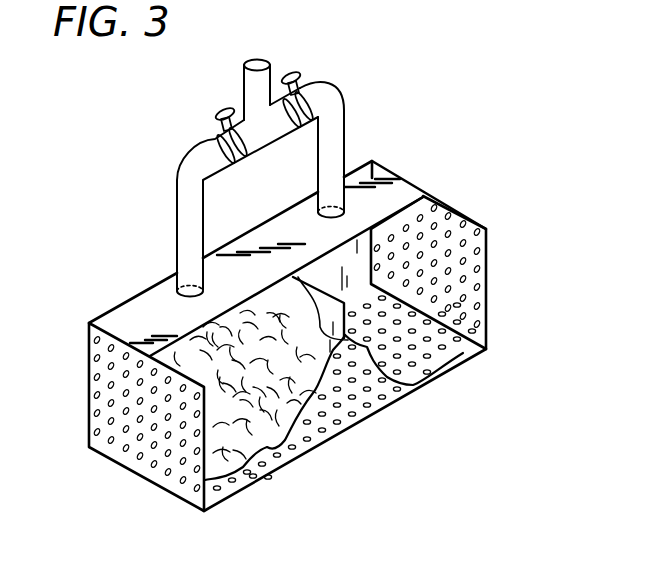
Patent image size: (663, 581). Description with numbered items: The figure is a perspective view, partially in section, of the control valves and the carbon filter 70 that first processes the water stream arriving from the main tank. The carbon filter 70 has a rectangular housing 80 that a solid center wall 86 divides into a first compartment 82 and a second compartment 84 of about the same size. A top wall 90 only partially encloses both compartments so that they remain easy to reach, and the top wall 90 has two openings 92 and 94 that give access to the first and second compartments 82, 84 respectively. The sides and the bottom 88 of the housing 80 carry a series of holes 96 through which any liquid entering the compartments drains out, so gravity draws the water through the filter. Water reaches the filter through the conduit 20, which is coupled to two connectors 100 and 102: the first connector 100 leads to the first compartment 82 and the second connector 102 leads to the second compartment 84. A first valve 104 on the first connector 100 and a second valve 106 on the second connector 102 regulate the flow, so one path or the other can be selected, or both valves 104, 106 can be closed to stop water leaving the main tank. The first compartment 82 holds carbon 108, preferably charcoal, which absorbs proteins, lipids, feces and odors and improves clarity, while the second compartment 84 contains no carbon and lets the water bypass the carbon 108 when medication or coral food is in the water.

The conduit 20 is at (247, 79).
The carbon filter 70 is at (519, 150).
The rectangular housing 80 is at (88, 405).
The first compartment 82 is at (135, 327).
The second compartment 84 is at (423, 222).
The solid center wall 86 is at (296, 275).
The bottom 88 is at (444, 353).
The top wall 90 is at (374, 157).
The opening 92 is at (191, 284).
The opening 94 is at (332, 208).
The holes 96 is at (268, 478).
The first connector 100 is at (194, 160).
The second connector 102 is at (328, 92).
The first valve 104 is at (222, 113).
The second valve 106 is at (293, 68).
The carbon 108 is at (226, 430).